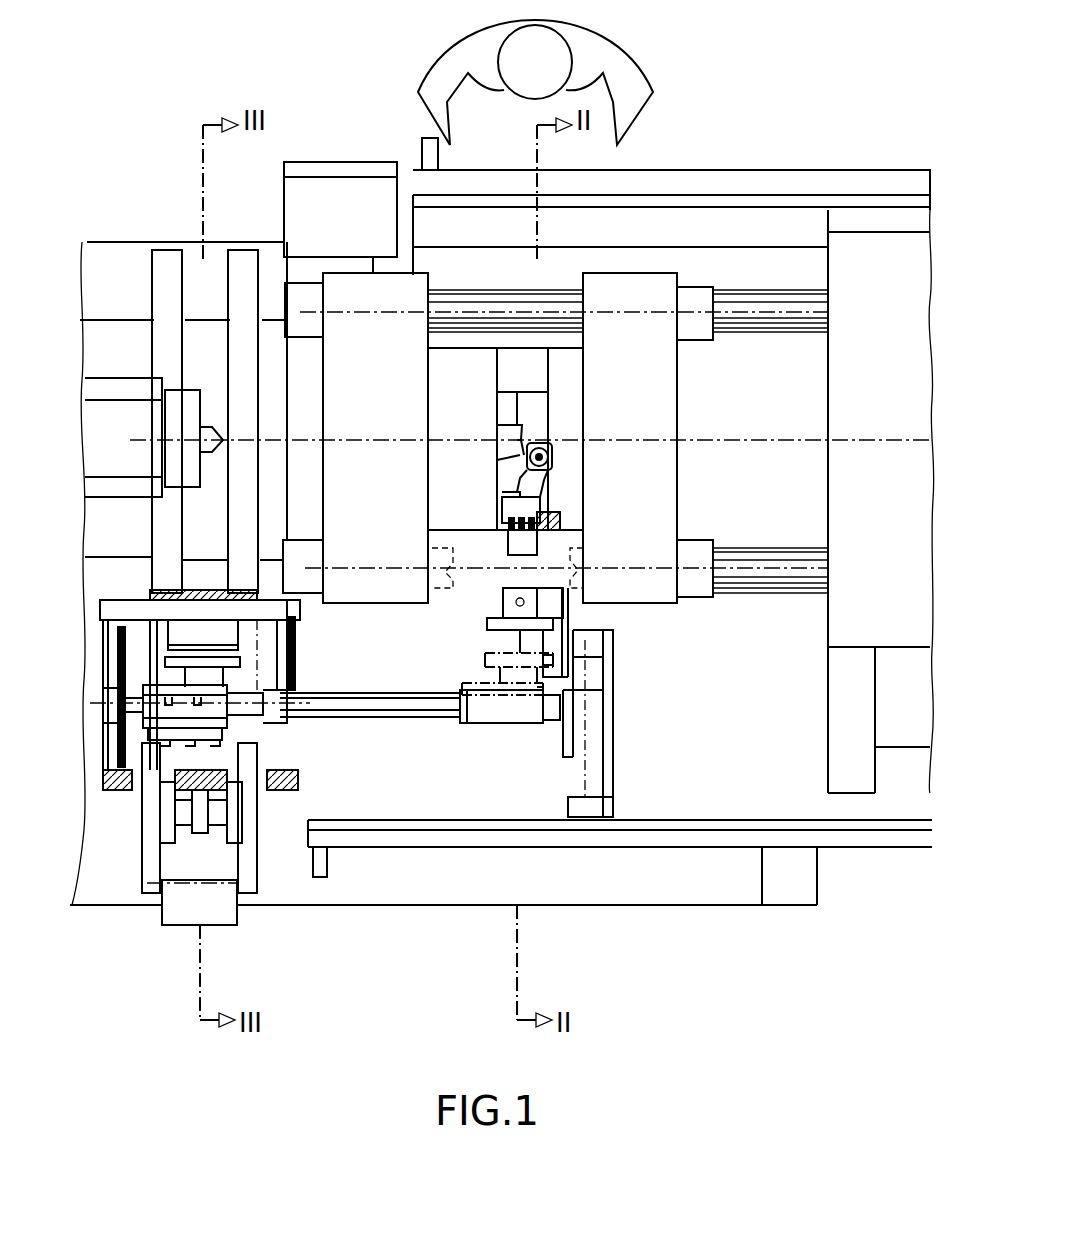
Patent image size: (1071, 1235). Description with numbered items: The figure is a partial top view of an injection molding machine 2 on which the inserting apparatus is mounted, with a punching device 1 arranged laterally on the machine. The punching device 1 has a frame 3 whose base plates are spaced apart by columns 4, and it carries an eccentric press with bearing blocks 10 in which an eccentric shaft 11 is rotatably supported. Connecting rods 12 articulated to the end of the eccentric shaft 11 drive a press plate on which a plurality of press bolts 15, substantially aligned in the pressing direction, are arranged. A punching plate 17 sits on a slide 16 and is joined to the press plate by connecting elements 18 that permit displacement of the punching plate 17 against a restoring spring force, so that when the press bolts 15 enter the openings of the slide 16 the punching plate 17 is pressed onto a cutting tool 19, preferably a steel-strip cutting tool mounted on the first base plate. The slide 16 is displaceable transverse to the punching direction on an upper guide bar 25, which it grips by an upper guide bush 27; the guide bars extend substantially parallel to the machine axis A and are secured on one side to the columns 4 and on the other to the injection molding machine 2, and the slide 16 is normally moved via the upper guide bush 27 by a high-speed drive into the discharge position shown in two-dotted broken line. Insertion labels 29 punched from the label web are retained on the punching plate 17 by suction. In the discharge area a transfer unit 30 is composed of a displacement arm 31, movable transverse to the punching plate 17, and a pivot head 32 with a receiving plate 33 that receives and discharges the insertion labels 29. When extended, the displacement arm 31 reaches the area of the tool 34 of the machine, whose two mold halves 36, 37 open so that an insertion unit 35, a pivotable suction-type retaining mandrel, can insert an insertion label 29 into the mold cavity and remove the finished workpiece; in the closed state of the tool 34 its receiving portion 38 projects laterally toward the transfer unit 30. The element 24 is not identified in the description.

The punching device 1 is at (100, 875).
The injection molding machine 2 is at (178, 242).
The frame 3 is at (298, 780).
The columns 4 is at (292, 626).
The bearing blocks 10 is at (200, 828).
The eccentric shaft 11 is at (240, 810).
The connecting rods 12 is at (258, 818).
The press bolts 15 is at (233, 718).
The slide 16 is at (462, 688).
The punching plate 17 is at (485, 660).
The connecting elements 18 is at (200, 665).
The cutting tool 19 is at (178, 640).
The drive block 24 is at (224, 926).
The upper guide bar 25 is at (392, 718).
The upper guide bush 27 is at (465, 722).
The insertion labels 29 is at (492, 655).
The transfer unit 30 is at (614, 741).
The displacement arm 31 is at (547, 595).
The pivot head 32 is at (508, 600).
The receiving plate 33 is at (500, 622).
The tool 34 is at (533, 367).
The insertion unit 35 is at (550, 497).
The mold half 36 is at (510, 407).
The mold half 37 is at (527, 397).
The receiving portion 38 is at (528, 547).
The machine axis A is at (880, 445).